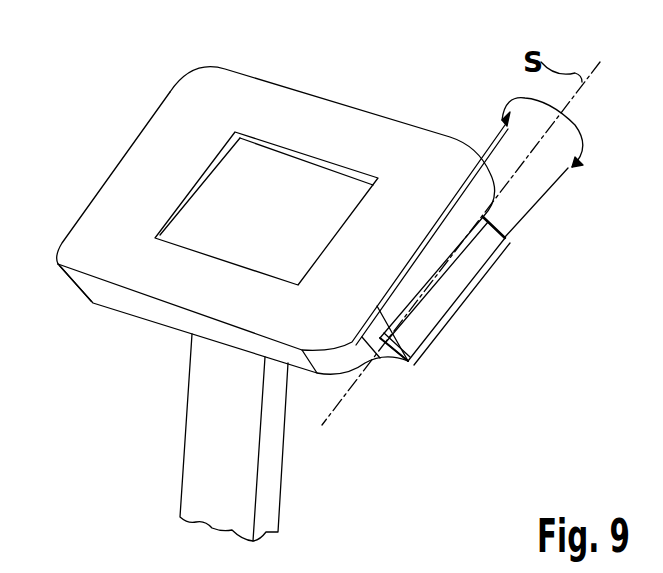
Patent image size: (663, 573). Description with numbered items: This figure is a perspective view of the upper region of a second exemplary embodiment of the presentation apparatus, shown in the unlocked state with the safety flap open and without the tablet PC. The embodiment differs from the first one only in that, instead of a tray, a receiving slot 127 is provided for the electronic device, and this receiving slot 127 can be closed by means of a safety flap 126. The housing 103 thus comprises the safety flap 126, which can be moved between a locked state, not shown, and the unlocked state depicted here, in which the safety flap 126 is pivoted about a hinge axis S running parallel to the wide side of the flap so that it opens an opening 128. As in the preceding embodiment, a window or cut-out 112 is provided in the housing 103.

The housing 103 is at (350, 147).
The window or cut-out 112 is at (262, 193).
The safety flap 126 is at (453, 287).
The receiving slot 127 is at (478, 247).
The opening 128 is at (427, 333).